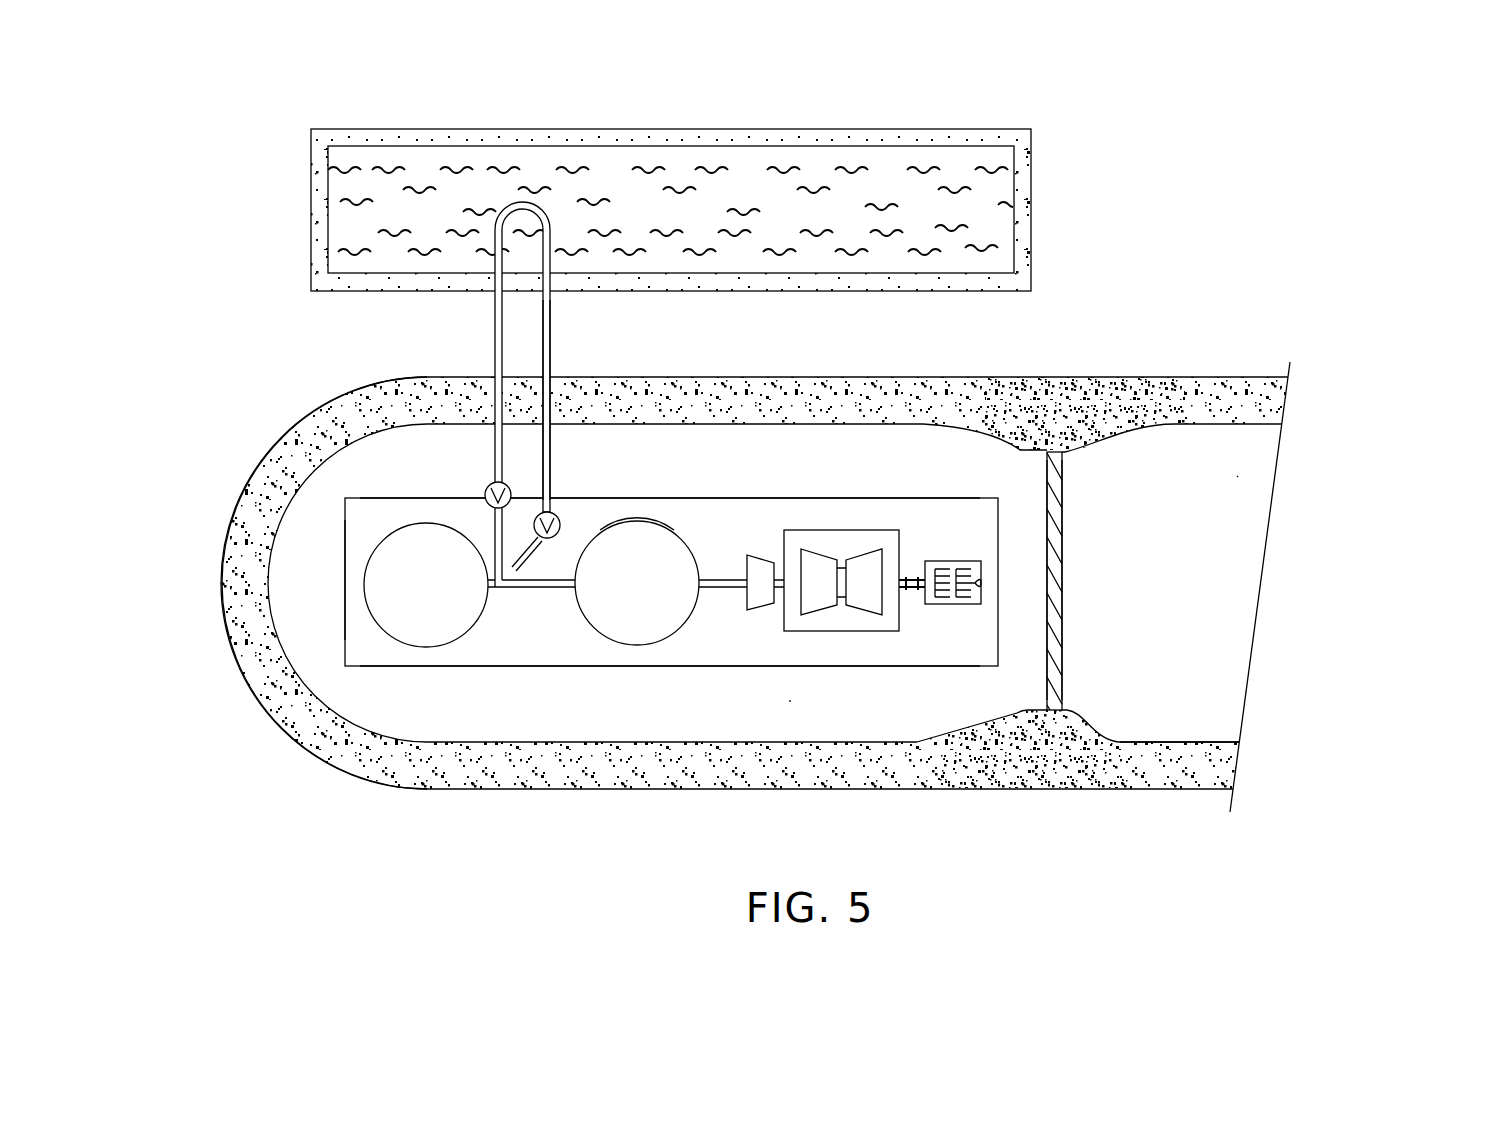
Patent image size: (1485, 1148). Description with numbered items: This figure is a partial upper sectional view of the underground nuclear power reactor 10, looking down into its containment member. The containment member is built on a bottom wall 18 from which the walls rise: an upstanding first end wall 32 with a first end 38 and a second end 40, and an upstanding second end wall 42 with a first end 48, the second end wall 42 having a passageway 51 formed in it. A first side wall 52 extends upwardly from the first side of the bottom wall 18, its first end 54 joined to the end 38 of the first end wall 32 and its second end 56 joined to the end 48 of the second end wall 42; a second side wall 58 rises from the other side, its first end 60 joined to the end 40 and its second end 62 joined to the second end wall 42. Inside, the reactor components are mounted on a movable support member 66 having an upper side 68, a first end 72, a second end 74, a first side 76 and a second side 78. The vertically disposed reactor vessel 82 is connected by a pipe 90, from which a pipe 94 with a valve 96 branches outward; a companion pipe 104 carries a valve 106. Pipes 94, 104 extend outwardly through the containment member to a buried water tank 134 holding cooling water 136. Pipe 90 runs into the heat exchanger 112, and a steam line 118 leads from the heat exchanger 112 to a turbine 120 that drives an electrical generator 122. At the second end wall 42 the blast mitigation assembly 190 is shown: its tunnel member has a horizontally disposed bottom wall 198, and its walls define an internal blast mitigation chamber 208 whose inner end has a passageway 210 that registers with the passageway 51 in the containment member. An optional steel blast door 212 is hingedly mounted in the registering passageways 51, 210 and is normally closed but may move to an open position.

The underground nuclear power reactor 10 is at (554, 640).
The bottom wall 18 is at (787, 734).
The first end wall 32 is at (224, 575).
The first end of first end wall 38 is at (347, 762).
The second end of first end wall 40 is at (335, 413).
The second end wall 42 is at (1046, 430).
The first end of second end wall 48 is at (1007, 720).
The passageway 51 is at (1023, 477).
The first side wall 52 is at (643, 767).
The first end of first side wall 54 is at (425, 744).
The second end of first side wall 56 is at (1013, 753).
The second side wall 58 is at (784, 387).
The first end of second side wall 60 is at (437, 420).
The second end of second side wall 62 is at (1015, 407).
The movable support member 66 is at (691, 468).
The upper side of support member 68 is at (698, 653).
The first end of support member 72 is at (343, 572).
The second end of support member 74 is at (985, 590).
The first side of support member 76 is at (682, 667).
The second side of support member 78 is at (785, 490).
The reactor vessel 82 is at (362, 636).
The pipe 90 is at (514, 589).
The pipe 94 is at (495, 338).
The valve 96 is at (486, 492).
The pipe 104 is at (550, 323).
The valve 106 is at (556, 524).
The heat exchanger 112 is at (629, 508).
The steam line 118 is at (720, 580).
The turbine 120 is at (872, 528).
The electrical generator 122 is at (982, 565).
The buried water tank 134 is at (855, 108).
The cooling water 136 is at (980, 185).
The blast mitigation assembly 190 is at (1290, 327).
The bottom wall of tunnel member 198 is at (1207, 760).
The blast mitigation chamber 208 is at (1237, 476).
The passageway 210 is at (1075, 510).
The blast door 212 is at (1053, 652).